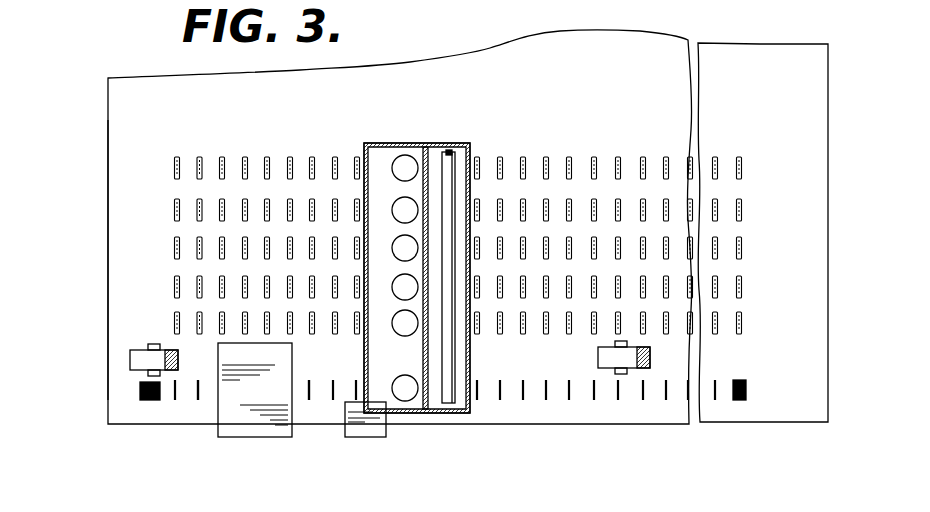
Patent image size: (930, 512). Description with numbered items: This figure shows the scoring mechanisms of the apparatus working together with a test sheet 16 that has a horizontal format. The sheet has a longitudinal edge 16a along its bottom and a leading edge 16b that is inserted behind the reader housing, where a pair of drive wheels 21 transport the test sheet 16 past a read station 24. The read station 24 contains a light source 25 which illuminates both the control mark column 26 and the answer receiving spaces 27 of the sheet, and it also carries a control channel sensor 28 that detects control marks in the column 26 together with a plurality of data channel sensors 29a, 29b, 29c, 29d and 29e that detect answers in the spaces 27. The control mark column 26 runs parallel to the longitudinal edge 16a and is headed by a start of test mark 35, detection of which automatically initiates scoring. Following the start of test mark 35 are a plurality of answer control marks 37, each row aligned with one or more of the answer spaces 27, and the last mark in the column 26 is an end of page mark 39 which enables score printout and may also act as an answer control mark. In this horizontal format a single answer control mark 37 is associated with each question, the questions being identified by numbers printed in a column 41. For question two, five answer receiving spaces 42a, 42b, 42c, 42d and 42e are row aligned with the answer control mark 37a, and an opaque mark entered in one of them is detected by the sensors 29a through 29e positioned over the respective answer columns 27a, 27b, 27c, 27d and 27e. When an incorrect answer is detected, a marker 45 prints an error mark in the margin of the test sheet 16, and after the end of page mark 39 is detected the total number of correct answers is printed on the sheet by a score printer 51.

The test sheet 16 is at (100, 126).
The longitudinal edge 16a is at (828, 263).
The leading edge 16b is at (108, 283).
The drive wheels 21 is at (135, 362).
The read station 24 is at (444, 136).
The light source 25 is at (453, 170).
The control mark column 26 is at (756, 392).
The answer receiving spaces 27 is at (755, 162).
The answer column 27a is at (750, 318).
The answer column 27b is at (750, 278).
The answer column 27c is at (748, 241).
The answer column 27d is at (750, 198).
The answer column 27e is at (745, 156).
The control channel sensor 28 is at (406, 394).
The data channel sensor 29a is at (397, 331).
The data channel sensor 29b is at (395, 290).
The data channel sensor 29c is at (395, 251).
The data channel sensor 29d is at (395, 212).
The data channel sensor 29e is at (403, 157).
The start of test mark 35 is at (148, 400).
The answer control marks 37 is at (309, 400).
The answer control mark 37a is at (198, 400).
The end of page mark 39 is at (739, 401).
The column 41 is at (752, 356).
The answer receiving space 42a is at (197, 317).
The answer receiving space 42b is at (197, 281).
The answer receiving space 42c is at (197, 242).
The answer receiving space 42d is at (197, 201).
The answer receiving space 42e is at (197, 160).
The marker 45 is at (362, 437).
The score printer 51 is at (255, 390).